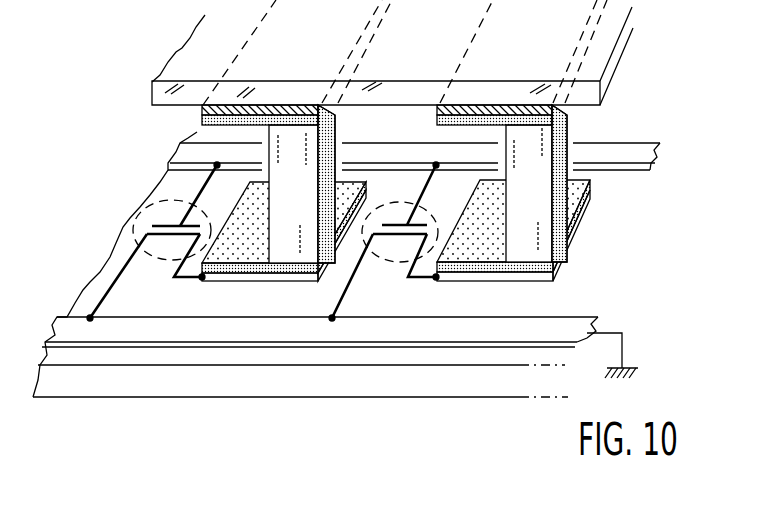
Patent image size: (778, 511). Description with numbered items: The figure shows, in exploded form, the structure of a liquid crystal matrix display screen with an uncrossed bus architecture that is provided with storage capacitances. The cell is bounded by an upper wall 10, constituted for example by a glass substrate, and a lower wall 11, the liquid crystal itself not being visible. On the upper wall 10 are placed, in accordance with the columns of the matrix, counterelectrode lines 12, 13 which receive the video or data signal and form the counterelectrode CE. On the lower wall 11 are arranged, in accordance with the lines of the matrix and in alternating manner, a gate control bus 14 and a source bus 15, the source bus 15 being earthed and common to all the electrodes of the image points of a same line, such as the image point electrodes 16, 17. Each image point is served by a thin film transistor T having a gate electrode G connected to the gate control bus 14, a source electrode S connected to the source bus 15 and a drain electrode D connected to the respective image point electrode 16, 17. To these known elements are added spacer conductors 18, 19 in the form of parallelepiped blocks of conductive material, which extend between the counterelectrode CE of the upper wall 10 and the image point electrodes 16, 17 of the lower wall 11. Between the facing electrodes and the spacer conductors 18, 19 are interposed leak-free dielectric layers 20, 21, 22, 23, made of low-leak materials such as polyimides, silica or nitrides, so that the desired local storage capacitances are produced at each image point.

The upper wall 10 is at (180, 90).
The lower wall 11 is at (103, 382).
The counterelectrode line 12 is at (200, 113).
The counterelectrode line 13 is at (557, 100).
The gate control bus 14 is at (595, 157).
The source bus 15 is at (212, 332).
The image point electrode 16 is at (240, 275).
The image point electrode 17 is at (463, 275).
The spacer conductor 18 is at (301, 208).
The spacer conductor 19 is at (537, 207).
The leak-free dielectric layer 20 is at (198, 122).
The leak-free dielectric layer 21 is at (250, 257).
The leak-free dielectric layer 22 is at (555, 118).
The leak-free dielectric layer 23 is at (487, 255).
The thin film transistor T is at (135, 212).
The gate electrode G is at (197, 196).
The source electrode S is at (127, 263).
The drain electrode D is at (177, 262).
The counterelectrode CE is at (456, 55).